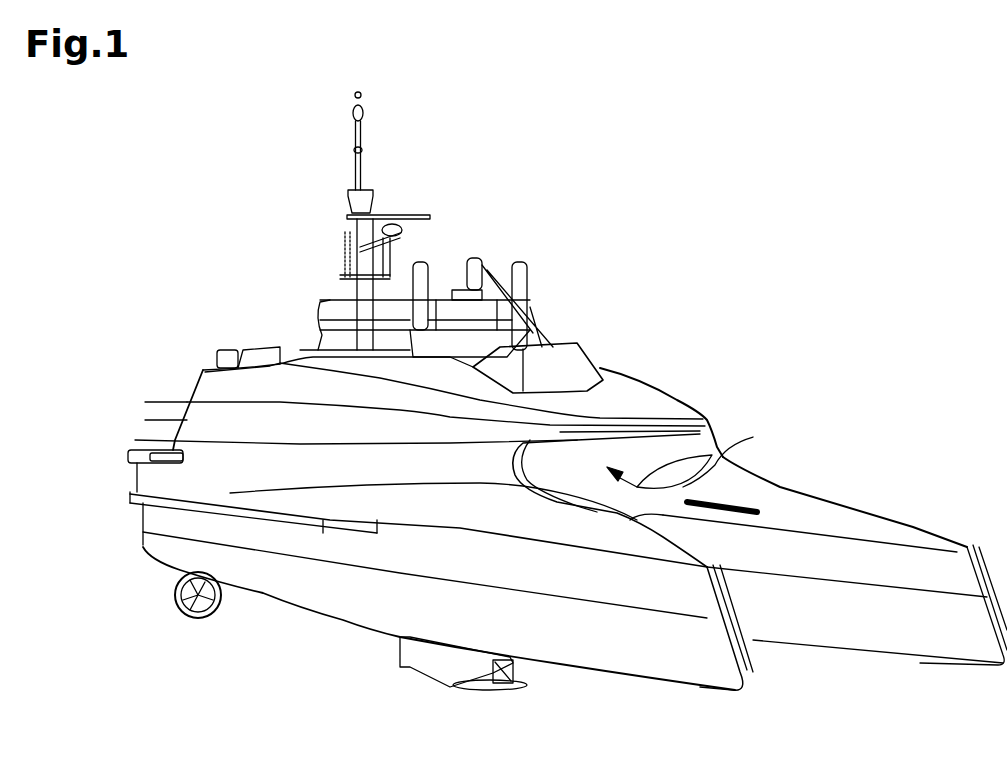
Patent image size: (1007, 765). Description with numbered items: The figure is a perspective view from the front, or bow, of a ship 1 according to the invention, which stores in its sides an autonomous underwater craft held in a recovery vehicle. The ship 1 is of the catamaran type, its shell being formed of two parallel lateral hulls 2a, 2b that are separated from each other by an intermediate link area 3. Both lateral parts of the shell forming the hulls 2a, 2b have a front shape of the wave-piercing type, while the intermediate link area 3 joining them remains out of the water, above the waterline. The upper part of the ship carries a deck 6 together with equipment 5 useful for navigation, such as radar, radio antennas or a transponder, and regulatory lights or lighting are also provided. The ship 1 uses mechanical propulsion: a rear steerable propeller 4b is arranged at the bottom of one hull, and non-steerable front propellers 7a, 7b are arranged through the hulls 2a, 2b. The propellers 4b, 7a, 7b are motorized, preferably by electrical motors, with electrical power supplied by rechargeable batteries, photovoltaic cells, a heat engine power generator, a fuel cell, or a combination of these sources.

The ship 1 is at (598, 245).
The lateral hull 2a is at (943, 640).
The lateral hull 2b is at (697, 660).
The intermediate link area 3 is at (693, 457).
The rear steerable propeller 4b is at (198, 620).
The equipment 5 is at (350, 257).
The deck 6 is at (630, 388).
The front propeller 7a is at (885, 614).
The front propeller 7b is at (632, 635).